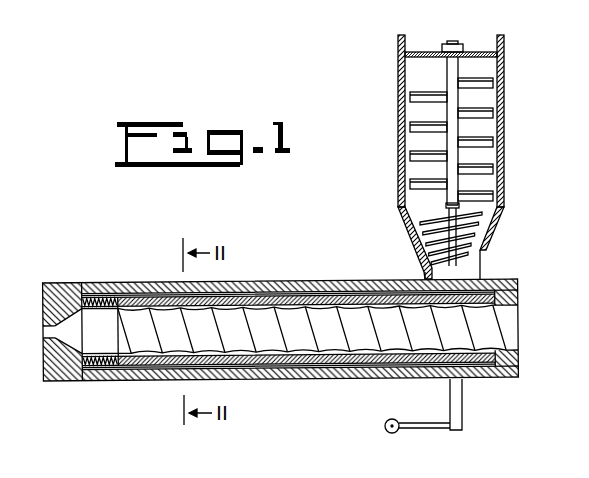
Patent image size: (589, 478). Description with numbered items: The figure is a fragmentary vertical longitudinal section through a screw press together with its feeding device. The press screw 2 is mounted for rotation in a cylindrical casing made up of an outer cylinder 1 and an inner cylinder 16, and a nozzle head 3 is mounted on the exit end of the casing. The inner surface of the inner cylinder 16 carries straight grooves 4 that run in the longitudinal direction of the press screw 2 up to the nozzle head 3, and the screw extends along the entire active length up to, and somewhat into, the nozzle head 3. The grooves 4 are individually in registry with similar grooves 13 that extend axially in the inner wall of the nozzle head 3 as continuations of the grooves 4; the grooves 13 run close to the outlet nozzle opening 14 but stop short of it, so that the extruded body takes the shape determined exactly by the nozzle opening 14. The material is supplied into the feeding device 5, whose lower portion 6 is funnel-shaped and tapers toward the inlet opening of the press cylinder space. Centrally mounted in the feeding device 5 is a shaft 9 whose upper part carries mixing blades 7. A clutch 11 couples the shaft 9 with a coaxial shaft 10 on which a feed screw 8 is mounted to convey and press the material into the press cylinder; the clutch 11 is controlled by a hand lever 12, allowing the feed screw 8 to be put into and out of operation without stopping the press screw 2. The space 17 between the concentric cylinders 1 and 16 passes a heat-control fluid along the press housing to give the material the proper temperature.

The outer cylinder 1 is at (252, 281).
The press screw 2 is at (260, 322).
The nozzle head 3 is at (60, 283).
The straight grooves 4 is at (303, 306).
The feeding device 5 is at (506, 113).
The lower portion 6 is at (484, 262).
The mixing blades 7 is at (487, 79).
The feed screw 8 is at (432, 248).
The shaft 9 is at (450, 137).
The coaxial shaft 10 is at (462, 397).
The clutch 11 is at (446, 206).
The hand lever 12 is at (418, 428).
The grooves 13 is at (95, 362).
The outlet nozzle opening 14 is at (43, 335).
The inner cylinder 16 is at (302, 358).
The space 17 is at (348, 367).